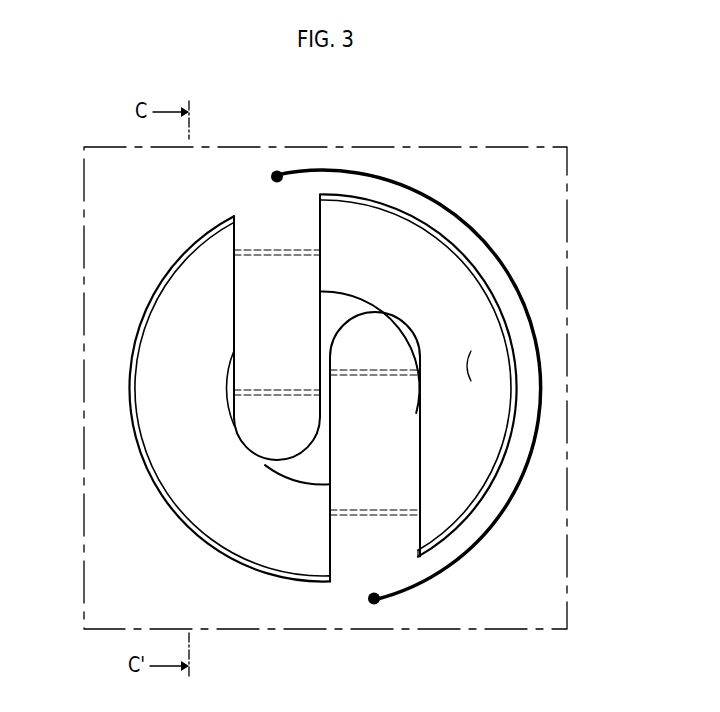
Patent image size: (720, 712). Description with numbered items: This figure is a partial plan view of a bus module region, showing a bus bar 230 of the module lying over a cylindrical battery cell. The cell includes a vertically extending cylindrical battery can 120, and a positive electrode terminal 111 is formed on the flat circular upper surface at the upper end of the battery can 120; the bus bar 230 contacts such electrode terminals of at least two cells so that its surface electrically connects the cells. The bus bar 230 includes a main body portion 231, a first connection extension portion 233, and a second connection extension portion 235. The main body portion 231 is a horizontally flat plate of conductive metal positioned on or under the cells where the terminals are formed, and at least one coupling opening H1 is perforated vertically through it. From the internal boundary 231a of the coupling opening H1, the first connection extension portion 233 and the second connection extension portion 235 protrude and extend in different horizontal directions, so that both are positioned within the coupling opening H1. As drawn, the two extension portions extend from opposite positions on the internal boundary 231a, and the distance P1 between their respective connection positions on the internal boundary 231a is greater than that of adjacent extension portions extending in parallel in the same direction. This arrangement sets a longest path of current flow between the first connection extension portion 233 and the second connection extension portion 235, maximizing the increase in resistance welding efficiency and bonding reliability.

The bus bar 230 is at (512, 120).
The main body portion 231 is at (518, 213).
The internal boundary 231a is at (353, 194).
The battery can 120 is at (445, 297).
The positive electrode terminal 111 is at (340, 308).
The first connection extension portion 233 is at (250, 310).
The second connection extension portion 235 is at (372, 450).
The coupling opening H1 is at (468, 368).
The distance P1 is at (528, 463).